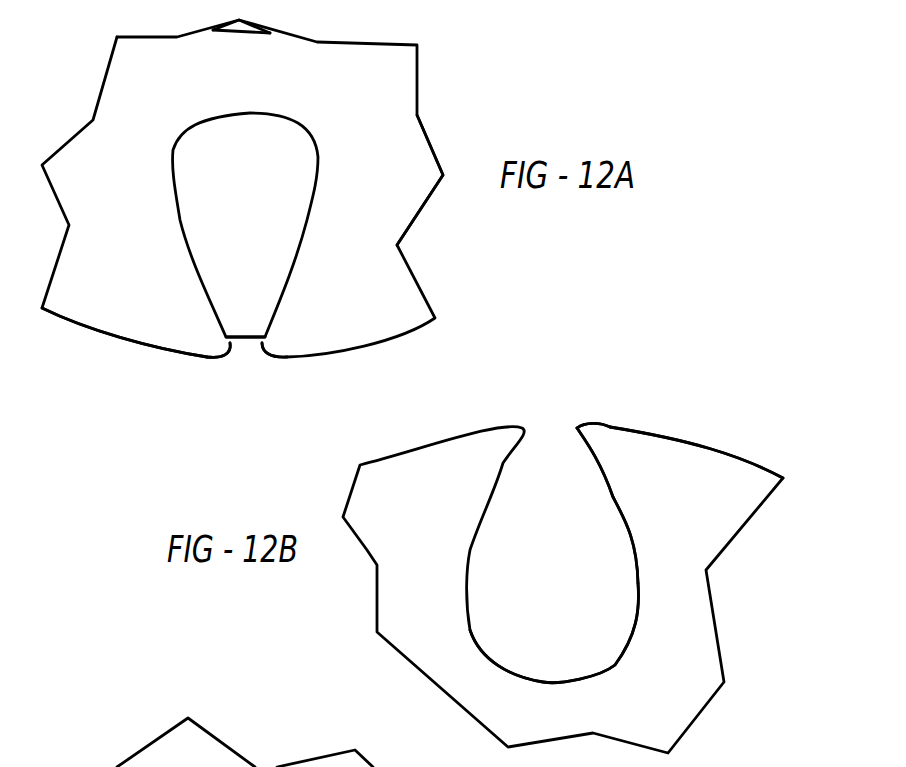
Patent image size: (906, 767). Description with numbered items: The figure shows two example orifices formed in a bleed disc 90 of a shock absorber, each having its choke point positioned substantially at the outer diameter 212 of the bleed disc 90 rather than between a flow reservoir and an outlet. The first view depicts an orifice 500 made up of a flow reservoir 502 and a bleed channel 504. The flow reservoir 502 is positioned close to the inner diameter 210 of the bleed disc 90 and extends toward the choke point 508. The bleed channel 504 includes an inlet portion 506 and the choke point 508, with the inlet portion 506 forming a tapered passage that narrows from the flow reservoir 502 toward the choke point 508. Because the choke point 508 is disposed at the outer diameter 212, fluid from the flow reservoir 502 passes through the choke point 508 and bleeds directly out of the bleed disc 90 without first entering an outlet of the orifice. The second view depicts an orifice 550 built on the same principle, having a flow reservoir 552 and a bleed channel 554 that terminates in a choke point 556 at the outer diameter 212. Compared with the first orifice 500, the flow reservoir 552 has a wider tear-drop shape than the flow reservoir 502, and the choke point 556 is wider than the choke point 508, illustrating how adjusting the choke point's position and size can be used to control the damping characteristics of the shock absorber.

In FIG. 12A, the orifice 500 is at (312, 107).
In FIG. 12A, the bleed disc 90 is at (398, 137).
In FIG. 12A, the inner diameter 210 is at (233, 31).
In FIG. 12A, the flow reservoir 502 is at (233, 145).
In FIG. 12A, the bleed channel 504 is at (247, 326).
In FIG. 12A, the inlet portion 506 is at (226, 337).
In FIG. 12A, the choke point 508 is at (262, 354).
In FIG. 12A, the outer diameter 212 is at (163, 353).
In FIG. 12B, the outer diameter 212 is at (730, 450).
In FIG. 12B, the orifice 550 is at (635, 455).
In FIG. 12B, the choke point 556 is at (608, 427).
In FIG. 12B, the bleed channel 554 is at (565, 457).
In FIG. 12B, the flow reservoir 552 is at (575, 643).